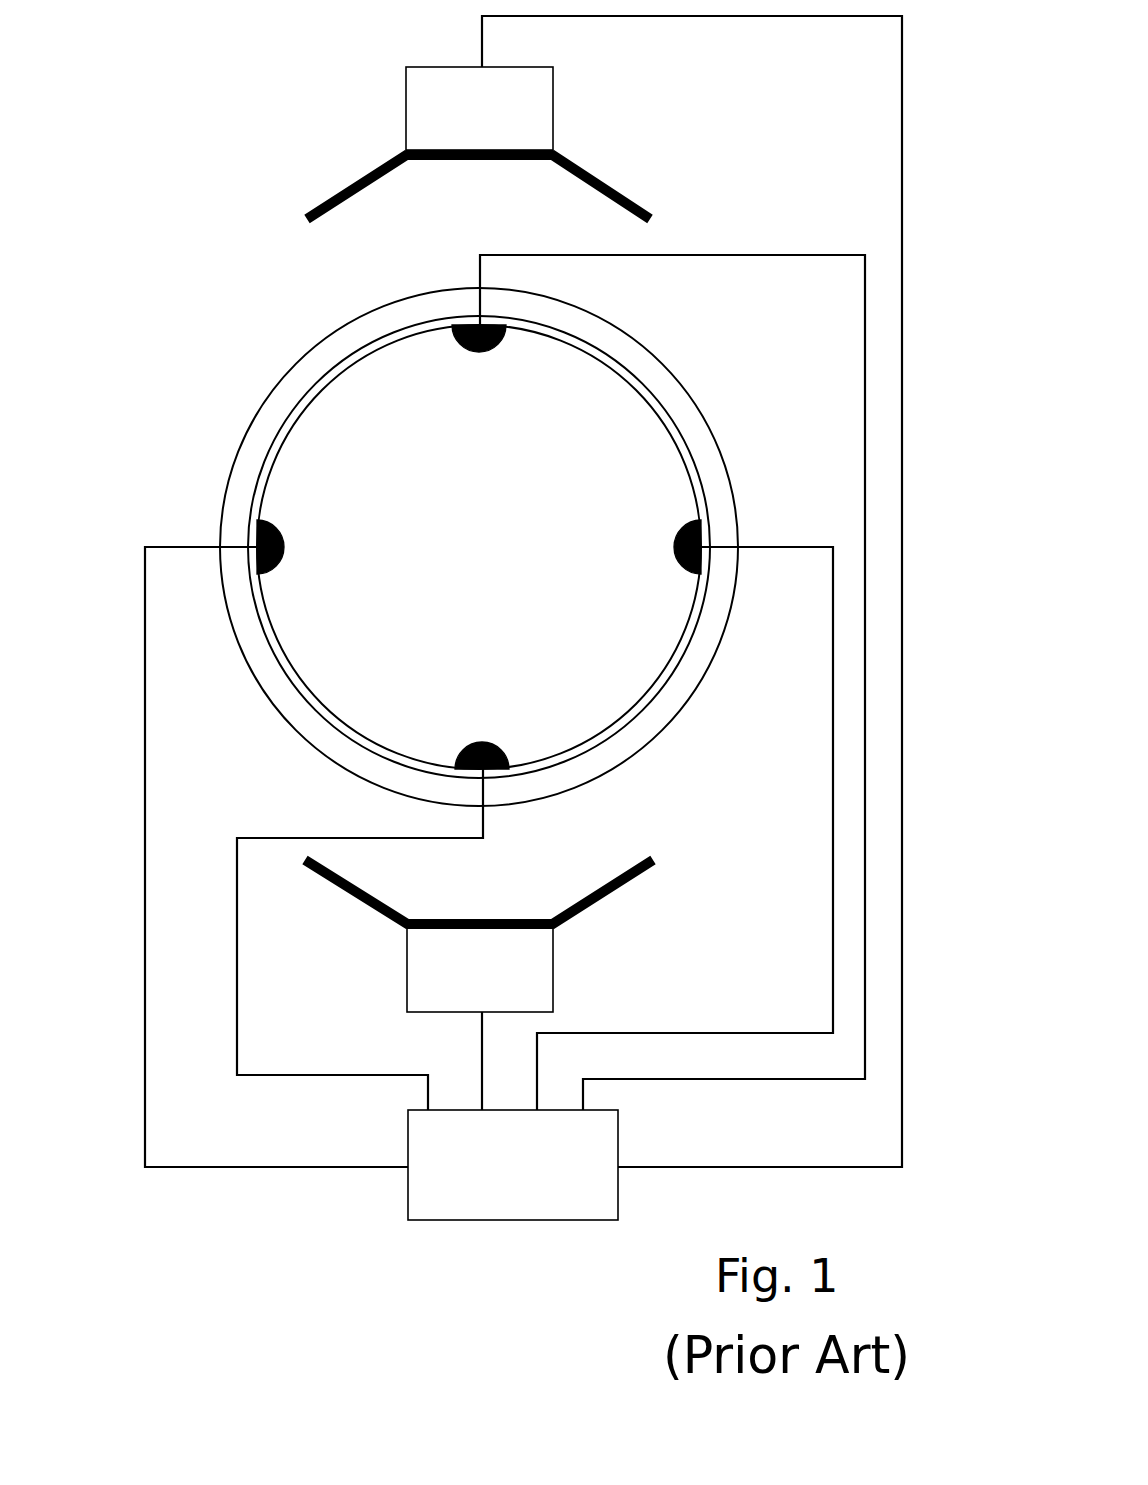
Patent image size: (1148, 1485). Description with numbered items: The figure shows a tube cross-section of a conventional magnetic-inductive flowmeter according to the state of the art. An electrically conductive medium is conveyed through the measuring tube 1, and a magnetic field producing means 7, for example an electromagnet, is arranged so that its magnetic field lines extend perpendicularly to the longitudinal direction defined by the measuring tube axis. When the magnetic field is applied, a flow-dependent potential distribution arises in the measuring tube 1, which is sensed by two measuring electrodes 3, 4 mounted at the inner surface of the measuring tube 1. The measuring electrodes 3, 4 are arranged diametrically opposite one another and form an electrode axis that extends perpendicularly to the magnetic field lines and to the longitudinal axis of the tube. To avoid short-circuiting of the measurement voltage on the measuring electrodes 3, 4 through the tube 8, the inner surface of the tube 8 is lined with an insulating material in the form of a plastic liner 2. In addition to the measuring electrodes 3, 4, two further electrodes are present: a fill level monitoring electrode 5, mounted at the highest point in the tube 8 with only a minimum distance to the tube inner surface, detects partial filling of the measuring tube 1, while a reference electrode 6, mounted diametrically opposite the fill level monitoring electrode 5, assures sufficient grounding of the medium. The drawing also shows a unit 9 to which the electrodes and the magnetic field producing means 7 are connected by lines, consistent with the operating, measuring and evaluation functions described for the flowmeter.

The measuring tube 1 is at (156, 184).
The plastic liner 2 is at (700, 500).
The measuring electrode 3 is at (285, 548).
The measuring electrode 4 is at (672, 556).
The fill level monitoring electrode 5 is at (497, 348).
The reference electrode 6 is at (502, 743).
The magnetic field producing means 7 is at (406, 67).
The tube 8 is at (700, 413).
The control and evaluation unit 9 is at (513, 1165).